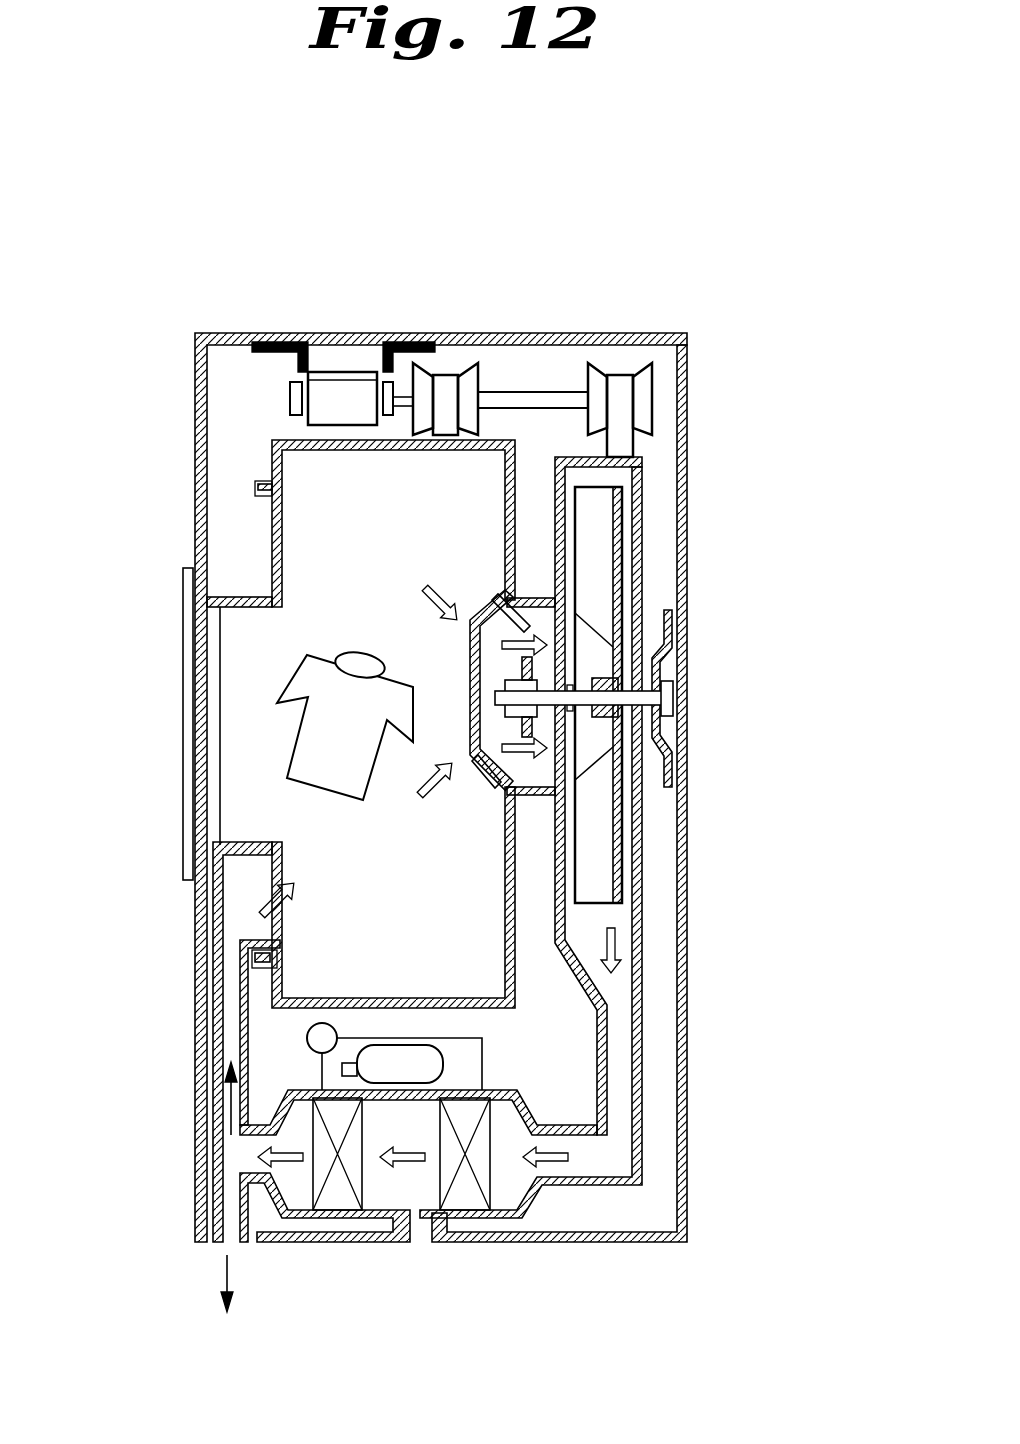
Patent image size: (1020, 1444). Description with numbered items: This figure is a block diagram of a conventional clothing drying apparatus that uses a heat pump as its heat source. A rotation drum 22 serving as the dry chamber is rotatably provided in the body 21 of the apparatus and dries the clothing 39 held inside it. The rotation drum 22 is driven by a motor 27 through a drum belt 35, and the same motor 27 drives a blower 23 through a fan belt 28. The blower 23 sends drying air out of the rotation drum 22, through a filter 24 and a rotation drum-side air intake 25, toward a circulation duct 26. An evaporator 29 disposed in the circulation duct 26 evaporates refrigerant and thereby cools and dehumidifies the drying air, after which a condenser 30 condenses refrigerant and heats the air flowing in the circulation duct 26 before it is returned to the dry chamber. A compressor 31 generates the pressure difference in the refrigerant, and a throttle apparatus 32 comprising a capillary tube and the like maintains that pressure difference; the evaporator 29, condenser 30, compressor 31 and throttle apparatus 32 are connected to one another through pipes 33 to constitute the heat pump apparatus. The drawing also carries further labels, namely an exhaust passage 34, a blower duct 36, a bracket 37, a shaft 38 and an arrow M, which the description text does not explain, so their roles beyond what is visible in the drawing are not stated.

The body 21 is at (248, 340).
The rotation drum 22 is at (276, 467).
The blower 23 is at (600, 525).
The filter 24 is at (488, 737).
The rotation drum-side air intake 25 is at (493, 600).
The circulation duct 26 is at (688, 1173).
The motor 27 is at (351, 382).
The fan belt 28 is at (614, 384).
The evaporator 29 is at (488, 1168).
The condenser 30 is at (320, 1175).
The compressor 31 is at (372, 1074).
The throttle apparatus 32 is at (310, 1028).
The pipes 33 is at (483, 1060).
The exhaust duct 34 is at (230, 1243).
The drum belt 35 is at (438, 383).
The fan duct 36 is at (560, 460).
The bracket 37 is at (668, 647).
The shaft 38 is at (645, 696).
The clothing 39 is at (290, 697).
The air flow M is at (614, 952).